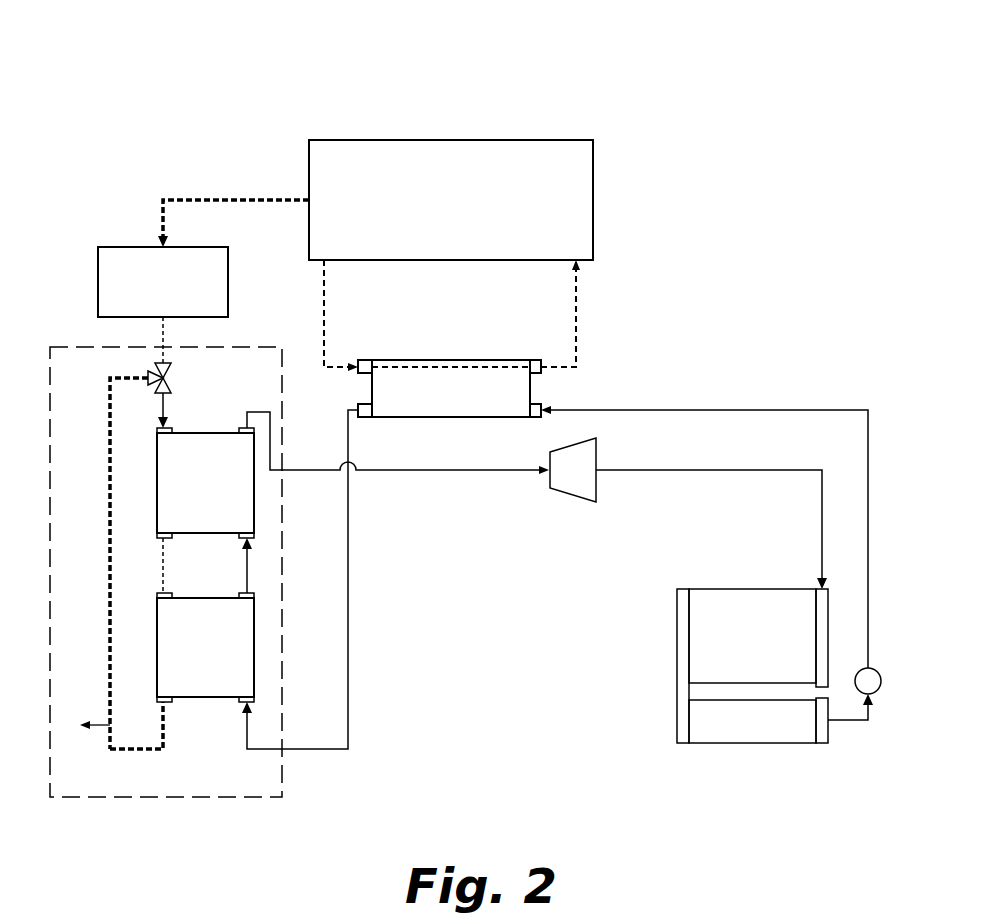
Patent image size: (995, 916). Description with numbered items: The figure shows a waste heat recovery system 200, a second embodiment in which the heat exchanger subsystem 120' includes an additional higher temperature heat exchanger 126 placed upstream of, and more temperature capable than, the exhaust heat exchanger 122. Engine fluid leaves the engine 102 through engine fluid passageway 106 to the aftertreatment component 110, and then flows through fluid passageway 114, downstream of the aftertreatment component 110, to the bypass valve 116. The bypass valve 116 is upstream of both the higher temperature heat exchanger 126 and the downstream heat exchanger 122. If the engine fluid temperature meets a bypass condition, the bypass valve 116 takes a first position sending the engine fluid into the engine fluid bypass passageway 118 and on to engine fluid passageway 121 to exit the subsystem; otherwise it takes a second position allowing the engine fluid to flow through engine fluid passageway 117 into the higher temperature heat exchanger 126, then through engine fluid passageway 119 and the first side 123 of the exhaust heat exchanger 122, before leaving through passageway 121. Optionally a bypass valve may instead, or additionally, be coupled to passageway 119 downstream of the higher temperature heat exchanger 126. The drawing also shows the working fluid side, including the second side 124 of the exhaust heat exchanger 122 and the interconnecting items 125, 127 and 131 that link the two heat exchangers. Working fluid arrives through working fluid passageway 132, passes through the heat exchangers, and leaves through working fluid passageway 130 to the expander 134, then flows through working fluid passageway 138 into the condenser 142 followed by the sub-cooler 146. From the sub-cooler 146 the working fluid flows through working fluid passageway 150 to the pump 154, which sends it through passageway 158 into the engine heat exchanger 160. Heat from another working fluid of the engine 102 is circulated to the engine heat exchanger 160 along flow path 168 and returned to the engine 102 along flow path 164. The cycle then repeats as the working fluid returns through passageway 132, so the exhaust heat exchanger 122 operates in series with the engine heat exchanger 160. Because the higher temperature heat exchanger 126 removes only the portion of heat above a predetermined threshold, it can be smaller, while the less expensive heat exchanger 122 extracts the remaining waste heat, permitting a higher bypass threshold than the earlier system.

The waste heat recovery system 200 is at (762, 106).
The engine 102 is at (433, 140).
The engine fluid passageway 106 is at (215, 200).
The aftertreatment component 110 is at (98, 270).
The fluid passageway 114 is at (165, 328).
The bypass valve 116 is at (170, 378).
The engine fluid passageway 117 is at (166, 413).
The engine fluid bypass passageway 118 is at (108, 509).
The engine fluid passageway 119 is at (163, 563).
The heat exchanger subsystem 120' is at (143, 572).
The engine fluid passageway 121 is at (105, 728).
The exhaust heat exchanger 122 is at (190, 702).
The first side 123 is at (157, 678).
The second side 124 is at (255, 640).
The first adsorber 125 is at (157, 512).
The higher temperature heat exchanger 126 is at (197, 537).
The first adsorber outlet line 127 is at (255, 488).
The working fluid passageway 130 is at (310, 470).
The inter-adsorber line 131 is at (250, 568).
The working fluid passageway 132 is at (322, 750).
The expander 134 is at (598, 450).
The working fluid passageway 138 is at (707, 470).
The condenser 142 is at (727, 589).
The sub-cooler 146 is at (735, 743).
The working fluid passageway 150 is at (846, 722).
The pump 154 is at (882, 684).
The passageway 158 is at (868, 481).
The engine heat exchanger 160 is at (406, 418).
The flow path 164 is at (577, 318).
The flow path 168 is at (324, 292).